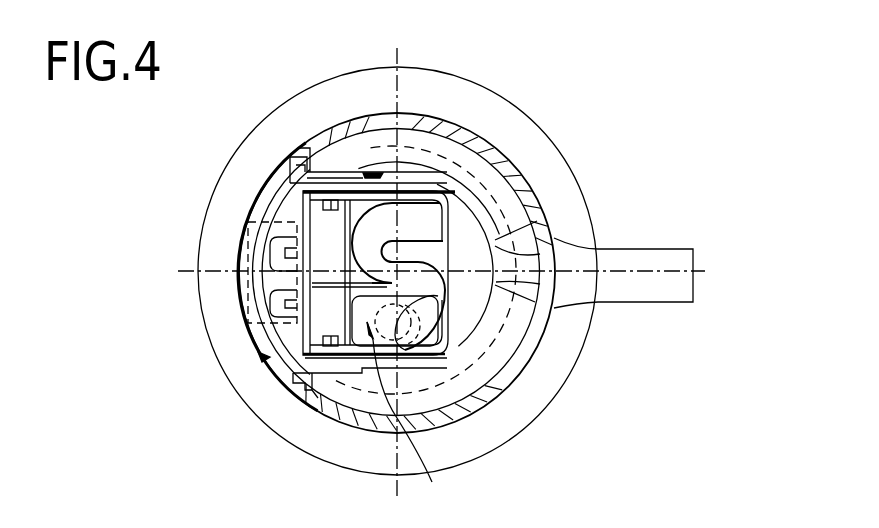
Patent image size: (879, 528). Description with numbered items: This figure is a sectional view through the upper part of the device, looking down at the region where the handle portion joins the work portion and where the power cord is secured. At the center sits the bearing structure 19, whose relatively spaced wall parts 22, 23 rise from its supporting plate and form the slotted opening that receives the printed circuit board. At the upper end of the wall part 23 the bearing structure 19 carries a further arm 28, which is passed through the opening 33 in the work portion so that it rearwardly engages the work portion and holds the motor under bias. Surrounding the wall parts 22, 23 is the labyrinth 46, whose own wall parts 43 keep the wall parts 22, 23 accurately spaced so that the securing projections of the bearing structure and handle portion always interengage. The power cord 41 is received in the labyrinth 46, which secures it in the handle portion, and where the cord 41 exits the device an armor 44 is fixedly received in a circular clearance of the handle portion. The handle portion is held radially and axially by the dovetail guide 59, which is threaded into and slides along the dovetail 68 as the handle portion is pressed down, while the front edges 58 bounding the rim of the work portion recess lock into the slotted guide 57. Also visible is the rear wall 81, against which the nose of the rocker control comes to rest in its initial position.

The bearing structure 19 is at (265, 359).
The wall part 22 is at (340, 363).
The wall part 23 is at (354, 118).
The arm 28 is at (248, 240).
The opening 33 is at (300, 172).
The power cord 41 is at (540, 206).
The wall parts 43 is at (417, 194).
The armor 44 is at (635, 260).
The labyrinth 46 is at (408, 403).
The slotted guide 57 is at (310, 160).
The front edges 58 is at (314, 150).
The dovetail guide 59 is at (287, 296).
The dovetail 68 is at (270, 283).
The rear wall 81 is at (312, 234).